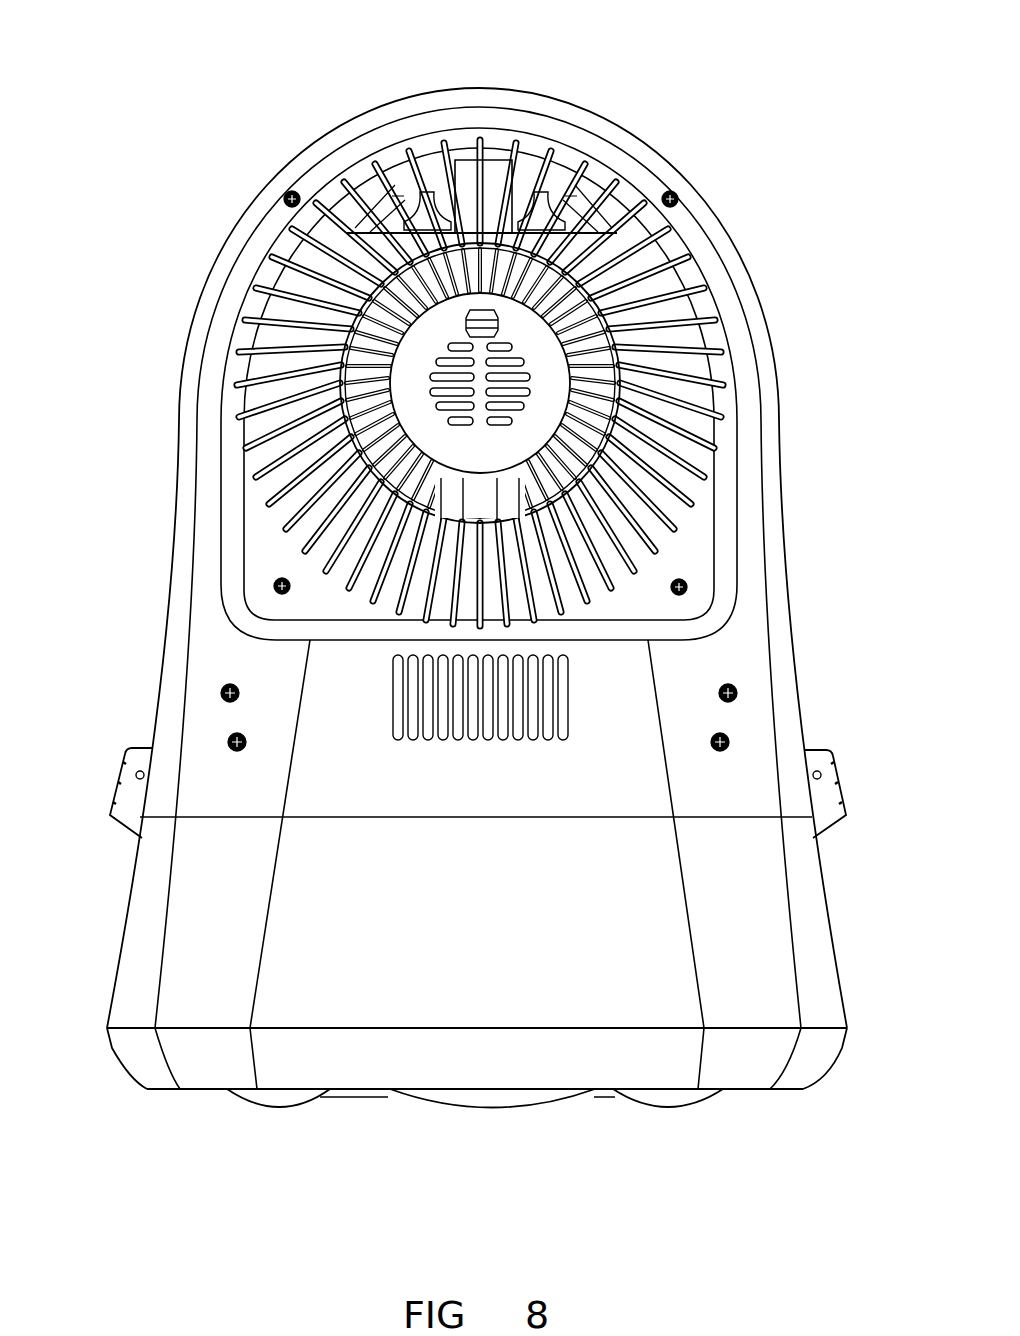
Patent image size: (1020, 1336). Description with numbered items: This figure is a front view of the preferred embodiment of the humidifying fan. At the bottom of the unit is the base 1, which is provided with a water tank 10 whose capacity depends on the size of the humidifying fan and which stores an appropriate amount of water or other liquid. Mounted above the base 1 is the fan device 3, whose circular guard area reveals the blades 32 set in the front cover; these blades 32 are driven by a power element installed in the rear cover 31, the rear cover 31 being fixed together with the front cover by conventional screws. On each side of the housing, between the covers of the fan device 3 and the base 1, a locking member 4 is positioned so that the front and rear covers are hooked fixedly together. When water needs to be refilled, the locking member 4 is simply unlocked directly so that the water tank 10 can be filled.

The base 1 is at (742, 1052).
The water tank 10 is at (390, 998).
The fan device 3 is at (252, 200).
The rear cover 31 is at (388, 115).
The blades 32 is at (265, 357).
The locking member 4 is at (140, 758).